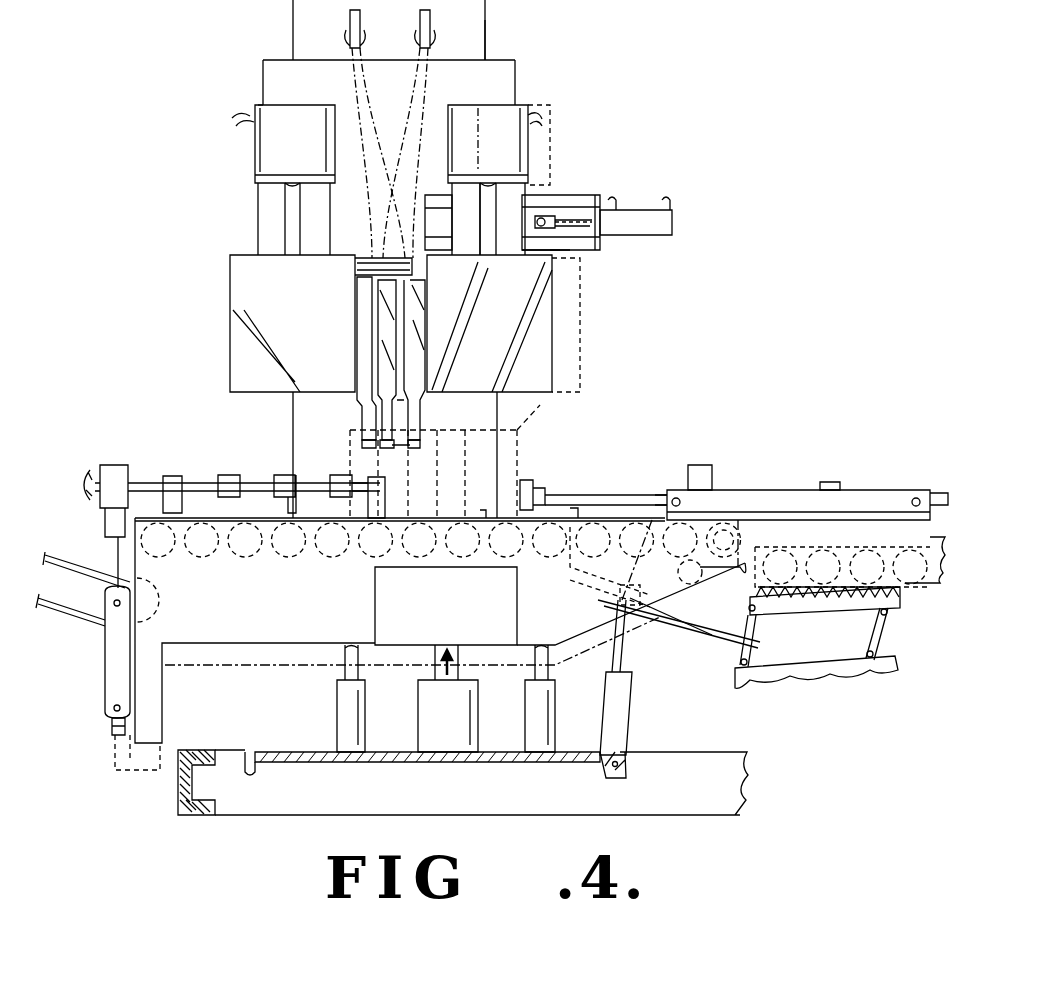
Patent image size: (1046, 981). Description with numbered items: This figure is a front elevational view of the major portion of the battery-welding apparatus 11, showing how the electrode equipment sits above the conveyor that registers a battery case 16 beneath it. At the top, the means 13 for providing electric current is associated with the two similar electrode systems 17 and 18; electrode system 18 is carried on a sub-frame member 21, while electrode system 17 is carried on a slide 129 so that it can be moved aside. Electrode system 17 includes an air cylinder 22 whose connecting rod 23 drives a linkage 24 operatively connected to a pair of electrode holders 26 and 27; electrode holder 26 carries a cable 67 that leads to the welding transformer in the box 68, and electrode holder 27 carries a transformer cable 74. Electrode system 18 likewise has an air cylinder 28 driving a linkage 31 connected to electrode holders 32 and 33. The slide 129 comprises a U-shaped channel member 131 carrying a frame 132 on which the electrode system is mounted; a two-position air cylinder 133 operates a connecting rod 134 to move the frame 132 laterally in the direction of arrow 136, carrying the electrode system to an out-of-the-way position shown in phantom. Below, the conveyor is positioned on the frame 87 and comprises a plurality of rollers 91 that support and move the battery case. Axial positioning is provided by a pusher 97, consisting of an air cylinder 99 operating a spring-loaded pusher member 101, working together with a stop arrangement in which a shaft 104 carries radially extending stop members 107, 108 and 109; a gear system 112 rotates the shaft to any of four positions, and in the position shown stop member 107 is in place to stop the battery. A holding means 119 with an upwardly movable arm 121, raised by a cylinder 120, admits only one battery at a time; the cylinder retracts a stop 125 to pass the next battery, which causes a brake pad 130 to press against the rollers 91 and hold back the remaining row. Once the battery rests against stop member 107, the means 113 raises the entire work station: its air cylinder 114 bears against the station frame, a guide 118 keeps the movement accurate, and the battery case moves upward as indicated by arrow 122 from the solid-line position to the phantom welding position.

The apparatus 11 is at (724, 228).
The means for providing electric current 13 is at (290, 10).
The battery case 16 is at (520, 432).
The electrode system 17 is at (592, 132).
The electrode system 18 is at (222, 60).
The sub-frame member 21 is at (258, 205).
The air cylinder 22 is at (505, 110).
The connecting rod 23 is at (483, 258).
The linkage 24 is at (552, 370).
The electrode holder 26 is at (400, 410).
The electrode holder 27 is at (420, 355).
The air cylinder 28 is at (258, 150).
The linkage 31 is at (226, 312).
The electrode holder 32 is at (358, 303).
The electrode holder 33 is at (385, 335).
The cable 67 is at (415, 80).
The box 68 is at (487, 30).
The transformer cable 74 is at (362, 88).
The frame 87 is at (620, 755).
The rollers 91 is at (296, 557).
The pusher 97 is at (608, 492).
The air cylinder 99 is at (758, 490).
The pusher member 101 is at (534, 482).
The shaft 104 is at (190, 480).
The stop member 107 is at (345, 475).
The stop member 108 is at (290, 475).
The stop member 109 is at (235, 475).
The gear system 112 is at (118, 465).
The means for bringing electrodes and battery into vertical alignment 113 is at (412, 722).
The air cylinder 114 is at (470, 752).
The guide 118 is at (556, 727).
The holding means 119 is at (890, 638).
The cylinder 120 is at (630, 700).
The arm 121 is at (708, 632).
The arrow 122 is at (455, 655).
The stop 125 is at (590, 486).
The slide 129 is at (604, 176).
The brake pad 130 is at (810, 604).
The U-shaped channel member 131 is at (566, 250).
The frame 132 is at (527, 158).
The air cylinder 133 is at (668, 236).
The connecting rod 134 is at (560, 216).
The arrow 136 is at (568, 330).